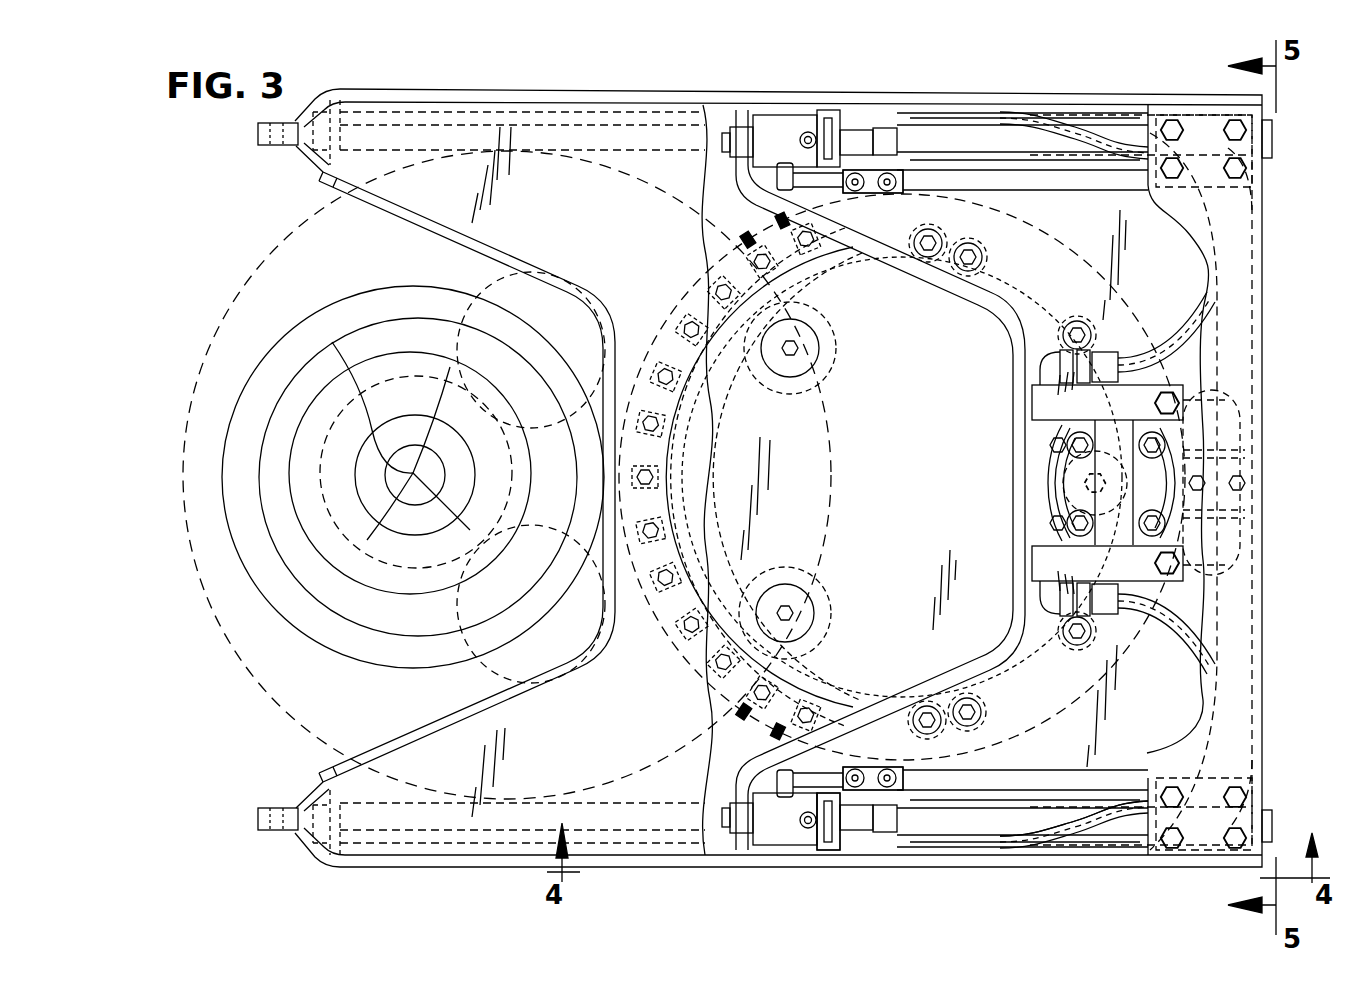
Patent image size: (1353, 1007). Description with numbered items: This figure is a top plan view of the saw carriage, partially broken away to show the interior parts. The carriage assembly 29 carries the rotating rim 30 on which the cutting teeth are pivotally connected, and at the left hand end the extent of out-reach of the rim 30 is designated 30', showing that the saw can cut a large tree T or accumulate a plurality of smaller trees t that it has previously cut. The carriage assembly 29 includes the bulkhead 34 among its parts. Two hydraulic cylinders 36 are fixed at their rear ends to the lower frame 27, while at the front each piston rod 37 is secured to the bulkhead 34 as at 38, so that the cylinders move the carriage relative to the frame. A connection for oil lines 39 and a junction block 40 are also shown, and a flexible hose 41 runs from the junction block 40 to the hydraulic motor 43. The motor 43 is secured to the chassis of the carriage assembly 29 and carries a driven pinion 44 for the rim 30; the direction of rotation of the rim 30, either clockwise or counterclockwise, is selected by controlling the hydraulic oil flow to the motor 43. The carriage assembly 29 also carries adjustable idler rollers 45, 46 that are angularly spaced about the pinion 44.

The lower frame 27 is at (1255, 722).
The carriage assembly 29 is at (1012, 382).
The rim 30 is at (902, 477).
The extent of out-reach of the rim 30' is at (495, 475).
The bulkhead 34 is at (955, 275).
The cylinders 36 is at (985, 120).
The piston rod 37 is at (637, 153).
The piston rod securement 38 is at (312, 846).
The connection for oil lines 39 is at (864, 767).
The junction block 40 is at (843, 842).
The flexible hose 41 is at (1077, 840).
The hydraulic motor 43 is at (1050, 504).
The driven pinion 44 is at (1050, 458).
The adjustable idler roller 45 is at (838, 363).
The adjustable idler roller 46 is at (832, 590).
The large tree T is at (245, 630).
The smaller trees t is at (516, 270).